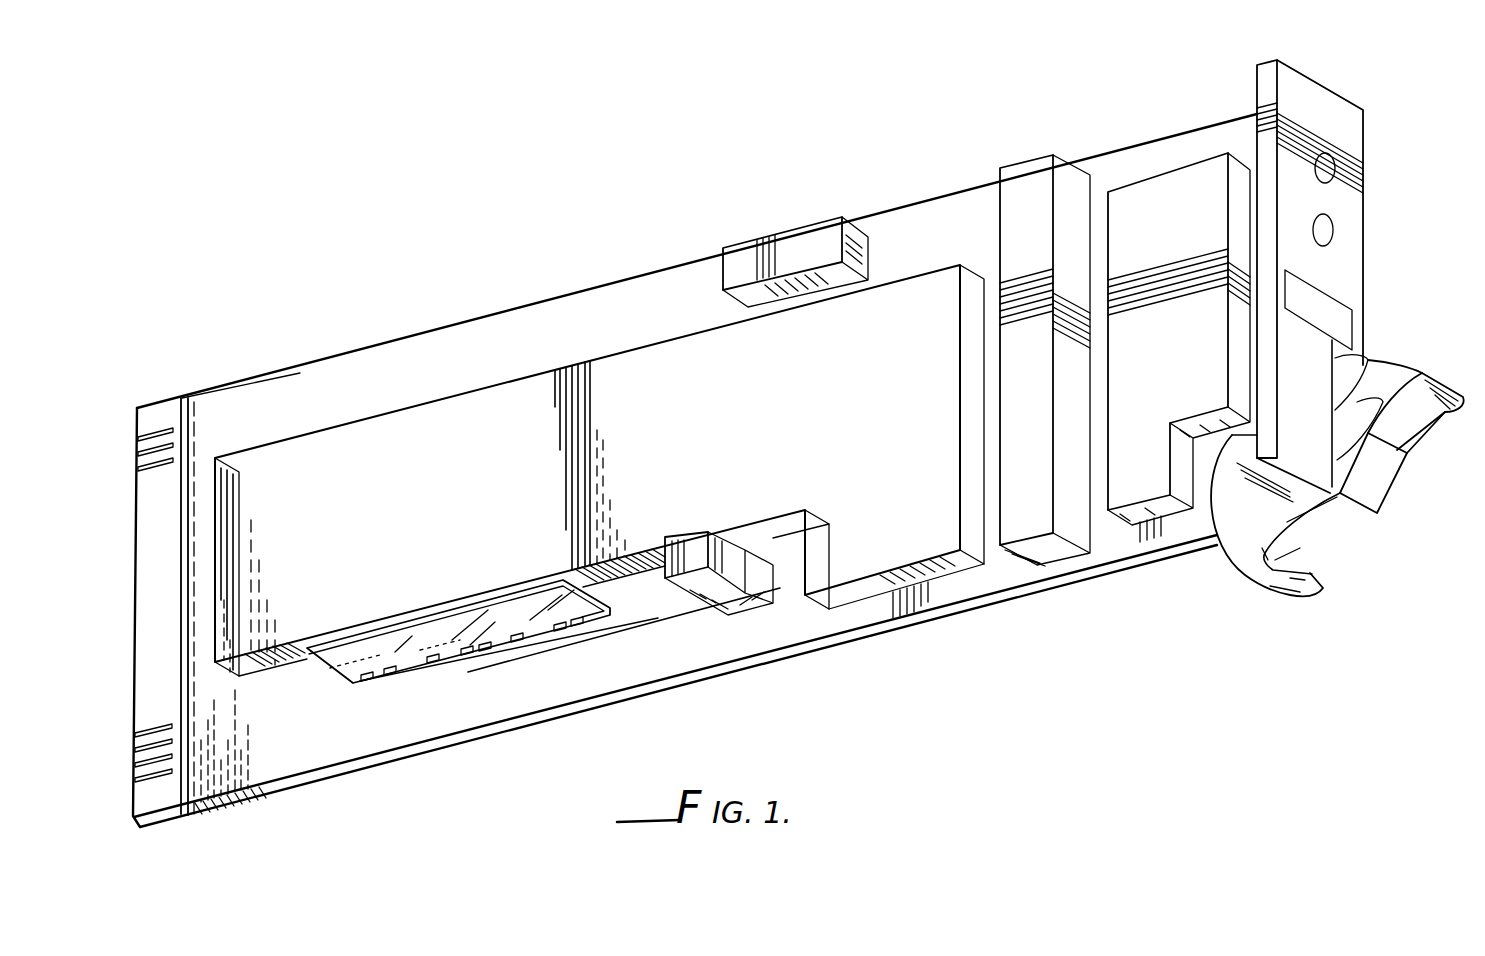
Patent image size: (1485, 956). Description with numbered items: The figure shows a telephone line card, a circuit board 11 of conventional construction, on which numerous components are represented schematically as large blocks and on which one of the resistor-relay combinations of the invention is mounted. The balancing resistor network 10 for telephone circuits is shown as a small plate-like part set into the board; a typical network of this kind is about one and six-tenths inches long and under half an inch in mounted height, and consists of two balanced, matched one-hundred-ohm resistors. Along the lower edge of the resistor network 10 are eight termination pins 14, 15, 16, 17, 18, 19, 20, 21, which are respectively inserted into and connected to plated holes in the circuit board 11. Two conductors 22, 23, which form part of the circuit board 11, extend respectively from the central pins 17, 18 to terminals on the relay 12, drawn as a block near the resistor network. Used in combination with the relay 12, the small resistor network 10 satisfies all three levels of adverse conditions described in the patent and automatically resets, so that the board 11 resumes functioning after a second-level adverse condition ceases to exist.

The balancing resistor network 10 is at (403, 627).
The telephone circuit board 11 is at (556, 300).
The relay 12 is at (700, 531).
The termination pin 14 is at (371, 681).
The termination pin 15 is at (388, 676).
The termination pin 16 is at (434, 664).
The central termination pin 17 is at (466, 656).
The central termination pin 18 is at (485, 652).
The termination pin 19 is at (521, 643).
The termination pin 20 is at (574, 632).
The termination pin 21 is at (591, 628).
The conductor 22 is at (658, 617).
The conductor 23 is at (679, 621).